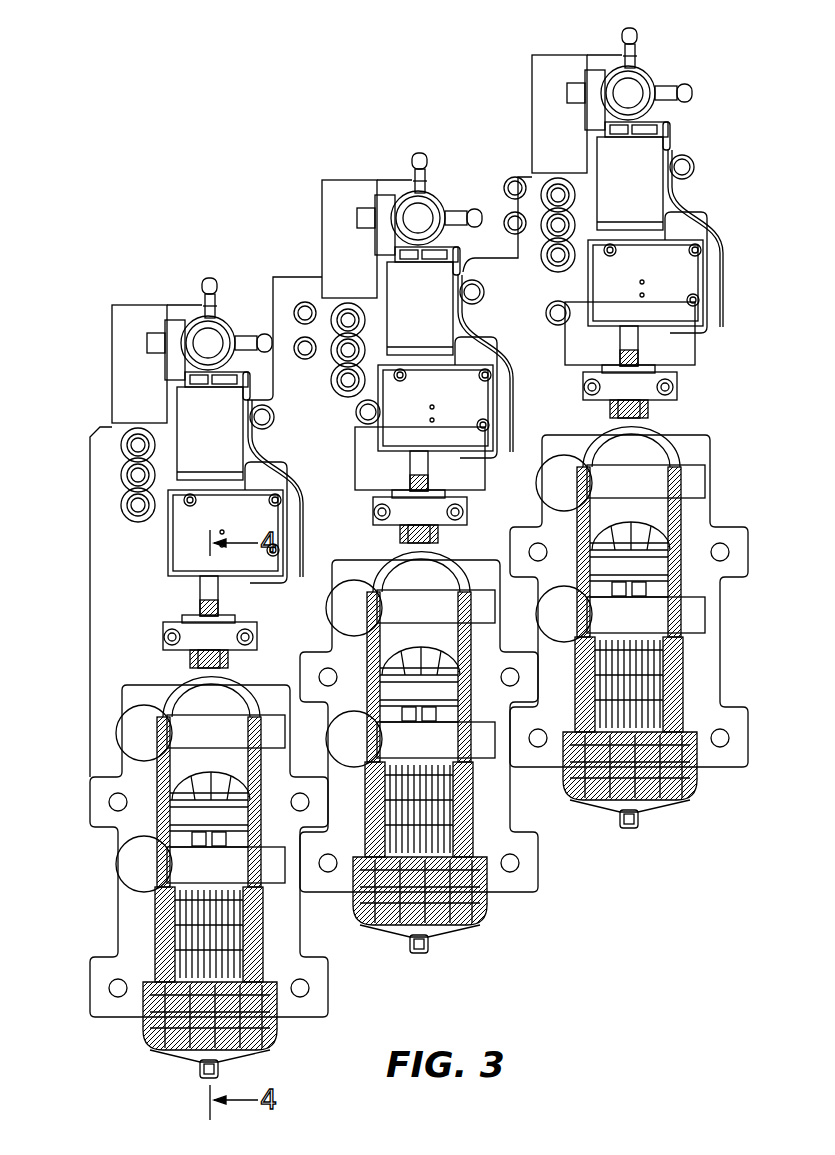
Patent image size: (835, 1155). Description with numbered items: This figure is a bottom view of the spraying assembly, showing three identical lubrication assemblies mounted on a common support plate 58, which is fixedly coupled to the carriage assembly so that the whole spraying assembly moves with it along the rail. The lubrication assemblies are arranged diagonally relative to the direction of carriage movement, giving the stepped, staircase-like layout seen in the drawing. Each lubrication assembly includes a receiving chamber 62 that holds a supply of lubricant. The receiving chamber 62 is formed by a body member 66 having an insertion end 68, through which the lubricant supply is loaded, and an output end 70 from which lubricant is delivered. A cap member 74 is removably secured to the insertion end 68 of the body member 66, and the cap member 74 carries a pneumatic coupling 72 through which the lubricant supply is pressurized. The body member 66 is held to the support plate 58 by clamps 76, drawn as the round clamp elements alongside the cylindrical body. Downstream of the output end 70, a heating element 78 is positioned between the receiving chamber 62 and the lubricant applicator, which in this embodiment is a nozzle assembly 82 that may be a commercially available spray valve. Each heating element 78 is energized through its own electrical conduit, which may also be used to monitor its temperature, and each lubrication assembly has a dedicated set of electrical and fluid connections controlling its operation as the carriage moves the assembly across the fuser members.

The support plate 58 is at (118, 572).
The receiving chamber 62 is at (140, 920).
The body member 66 is at (160, 782).
The insertion end 68 is at (262, 930).
The output end 70 is at (172, 683).
The pneumatic coupling 72 is at (200, 1065).
The cap member 74 is at (143, 1028).
The clamps 76 is at (135, 733).
The heating element 78 is at (188, 403).
The nozzle assembly 82 is at (185, 330).